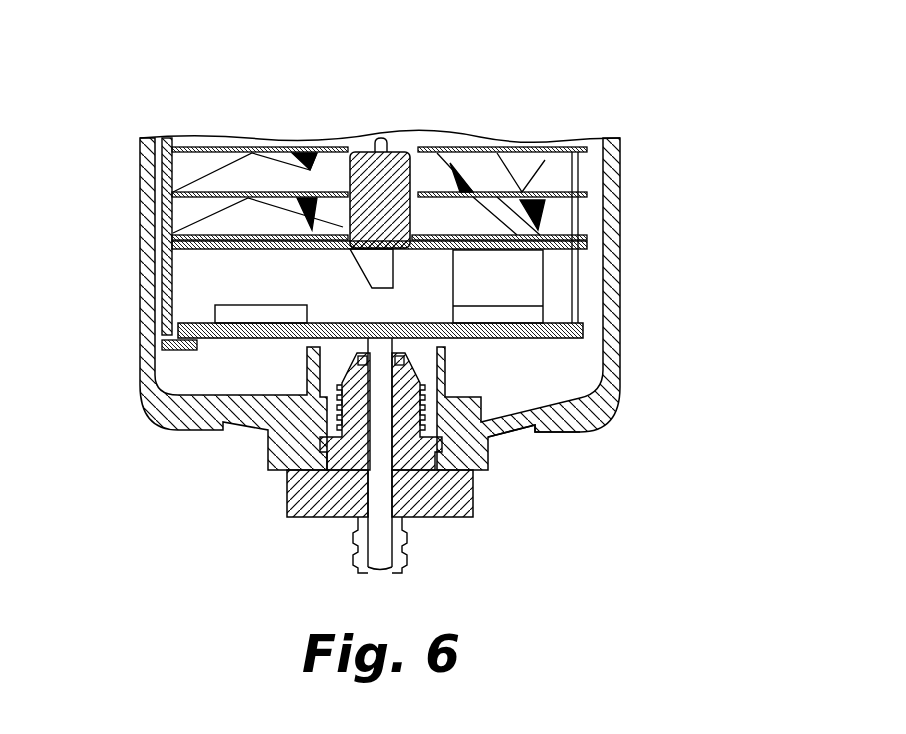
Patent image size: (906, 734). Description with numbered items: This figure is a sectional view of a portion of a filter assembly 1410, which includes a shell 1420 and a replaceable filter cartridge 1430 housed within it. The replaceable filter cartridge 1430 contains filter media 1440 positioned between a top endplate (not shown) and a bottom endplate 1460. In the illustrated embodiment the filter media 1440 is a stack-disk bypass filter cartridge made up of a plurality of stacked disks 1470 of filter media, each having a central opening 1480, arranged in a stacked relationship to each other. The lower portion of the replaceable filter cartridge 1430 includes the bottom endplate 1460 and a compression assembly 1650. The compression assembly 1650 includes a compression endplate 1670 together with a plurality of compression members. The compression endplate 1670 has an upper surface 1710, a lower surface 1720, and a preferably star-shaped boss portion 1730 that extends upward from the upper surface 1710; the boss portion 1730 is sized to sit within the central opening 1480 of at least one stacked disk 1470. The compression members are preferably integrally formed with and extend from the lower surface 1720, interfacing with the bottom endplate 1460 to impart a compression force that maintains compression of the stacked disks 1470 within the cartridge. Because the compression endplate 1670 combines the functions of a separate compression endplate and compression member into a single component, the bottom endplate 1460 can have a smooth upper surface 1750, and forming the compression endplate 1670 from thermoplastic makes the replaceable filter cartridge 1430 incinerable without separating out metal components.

The filter assembly 1410 is at (117, 131).
The shell 1420 is at (621, 173).
The replaceable filter cartridge 1430 is at (233, 136).
The filter media 1440 is at (523, 112).
The stacked disks 1470 is at (212, 175).
The central opening 1480 is at (421, 227).
The upper surface 1710 is at (553, 234).
The lower surface 1720 is at (205, 310).
The boss portion 1730 is at (382, 137).
The smooth upper surface 1750 is at (540, 322).
The compression assembly 1650 is at (640, 349).
The bottom endplate 1460 is at (200, 348).
The compression endplate 1670 is at (368, 342).